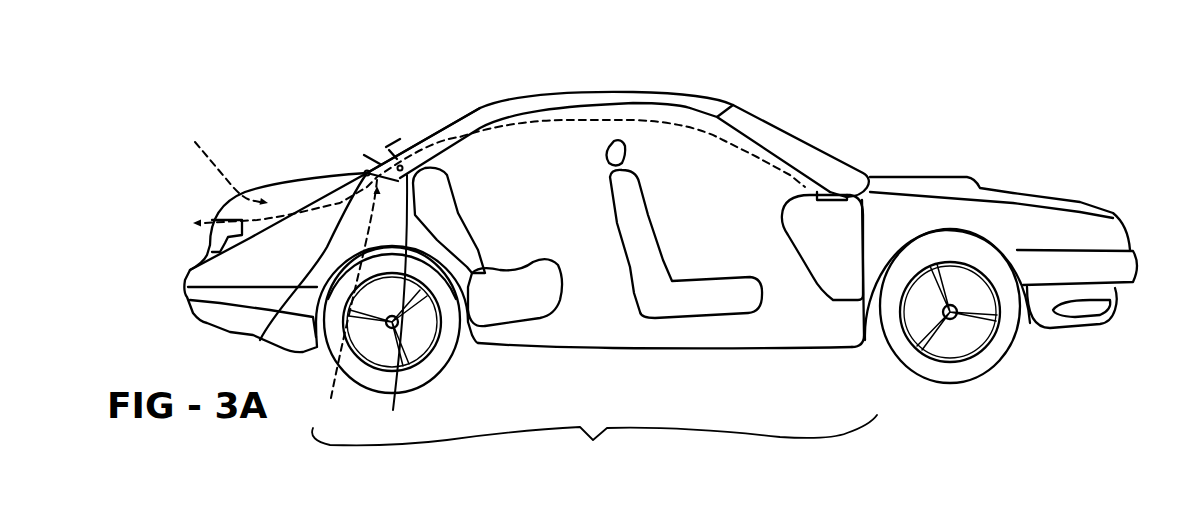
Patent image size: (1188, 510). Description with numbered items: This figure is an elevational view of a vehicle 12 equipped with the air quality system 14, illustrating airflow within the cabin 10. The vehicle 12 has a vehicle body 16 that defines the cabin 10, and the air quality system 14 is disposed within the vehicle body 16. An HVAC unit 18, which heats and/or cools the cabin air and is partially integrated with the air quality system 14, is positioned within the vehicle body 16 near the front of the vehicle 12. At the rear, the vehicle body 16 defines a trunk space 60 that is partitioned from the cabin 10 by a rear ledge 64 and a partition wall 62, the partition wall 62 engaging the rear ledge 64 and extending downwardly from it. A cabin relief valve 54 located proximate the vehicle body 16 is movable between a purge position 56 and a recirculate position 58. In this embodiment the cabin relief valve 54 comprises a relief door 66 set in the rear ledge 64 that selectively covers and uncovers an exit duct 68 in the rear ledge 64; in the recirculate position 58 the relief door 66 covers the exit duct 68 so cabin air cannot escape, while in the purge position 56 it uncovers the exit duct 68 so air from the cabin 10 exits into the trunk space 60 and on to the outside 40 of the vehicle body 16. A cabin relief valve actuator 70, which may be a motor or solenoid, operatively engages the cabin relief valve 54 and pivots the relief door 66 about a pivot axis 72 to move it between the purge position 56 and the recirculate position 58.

The cabin 10 is at (522, 223).
The vehicle 12 is at (938, 140).
The air quality system 14 is at (594, 441).
The vehicle body 16 is at (1020, 213).
The HVAC unit 18 is at (823, 260).
The outside 40 is at (888, 130).
The cabin relief valve 54 is at (393, 140).
The purge position 56 is at (375, 160).
The recirculate position 58 is at (348, 304).
The trunk space 60 is at (216, 181).
The partition wall 62 is at (393, 302).
The rear ledge 64 is at (370, 156).
The relief door 66 is at (393, 155).
The exit duct 68 is at (401, 166).
The cabin relief valve actuator 70 is at (188, 271).
The pivot axis 72 is at (260, 340).